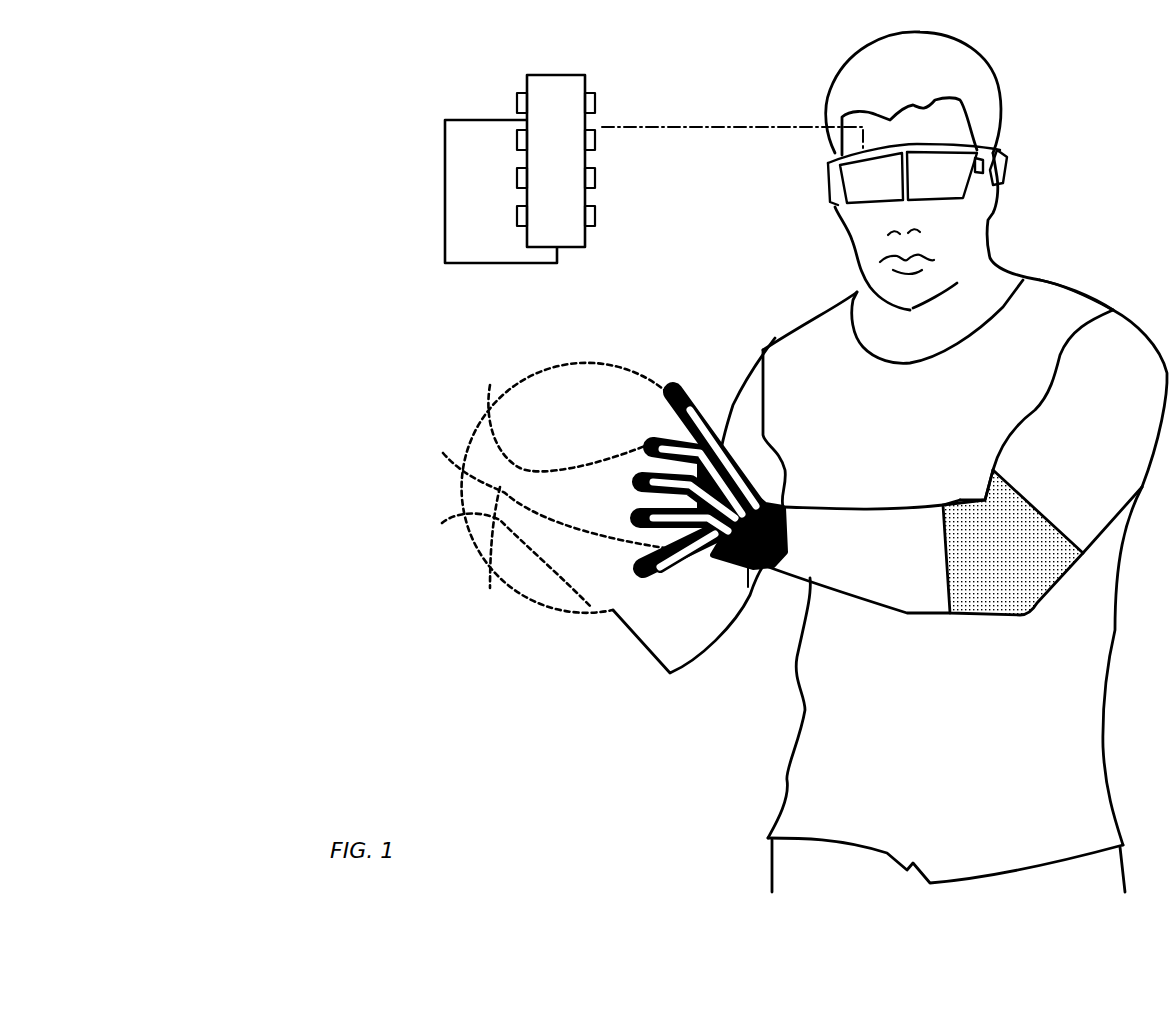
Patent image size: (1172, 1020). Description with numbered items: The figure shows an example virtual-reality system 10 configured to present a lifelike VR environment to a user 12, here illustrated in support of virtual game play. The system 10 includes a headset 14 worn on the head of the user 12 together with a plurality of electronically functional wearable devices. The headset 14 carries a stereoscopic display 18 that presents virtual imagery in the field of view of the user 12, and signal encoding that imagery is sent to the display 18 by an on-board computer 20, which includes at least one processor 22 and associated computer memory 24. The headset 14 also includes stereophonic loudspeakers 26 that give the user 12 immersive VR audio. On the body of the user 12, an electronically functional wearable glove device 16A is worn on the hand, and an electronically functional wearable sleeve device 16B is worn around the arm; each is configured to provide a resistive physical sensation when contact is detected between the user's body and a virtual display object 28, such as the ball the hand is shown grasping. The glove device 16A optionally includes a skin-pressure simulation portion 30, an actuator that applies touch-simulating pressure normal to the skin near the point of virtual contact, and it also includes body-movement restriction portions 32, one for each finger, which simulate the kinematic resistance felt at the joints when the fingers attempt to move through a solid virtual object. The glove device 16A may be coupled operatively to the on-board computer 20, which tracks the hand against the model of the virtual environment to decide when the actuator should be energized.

The virtual-reality system 10 is at (370, 342).
The user 12 is at (975, 444).
The headset 14 is at (913, 188).
The electronically functional wearable glove device 16A is at (811, 538).
The electronically functional wearable sleeve device 16B is at (1032, 556).
The stereoscopic display 18 is at (892, 199).
The on-board computer 20 is at (641, 149).
The processor 22 is at (514, 204).
The computer memory 24 is at (569, 173).
The stereophonic loudspeakers 26 is at (1000, 166).
The virtual display object 28 is at (597, 566).
The skin-pressure simulation portion 30 is at (668, 393).
The body-movement restriction portion 32 is at (748, 587).